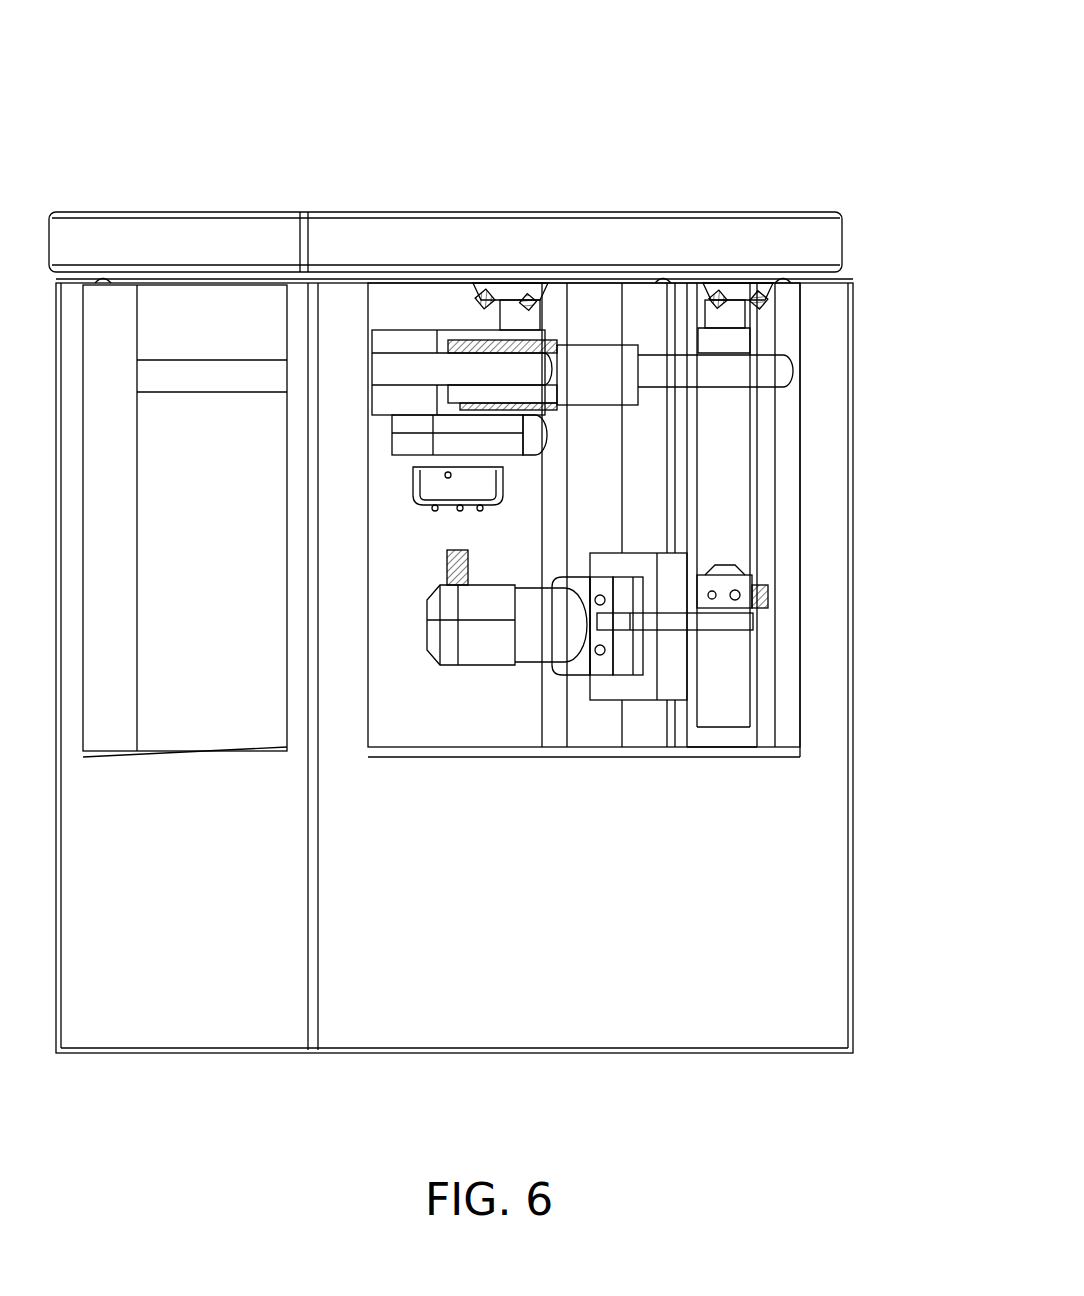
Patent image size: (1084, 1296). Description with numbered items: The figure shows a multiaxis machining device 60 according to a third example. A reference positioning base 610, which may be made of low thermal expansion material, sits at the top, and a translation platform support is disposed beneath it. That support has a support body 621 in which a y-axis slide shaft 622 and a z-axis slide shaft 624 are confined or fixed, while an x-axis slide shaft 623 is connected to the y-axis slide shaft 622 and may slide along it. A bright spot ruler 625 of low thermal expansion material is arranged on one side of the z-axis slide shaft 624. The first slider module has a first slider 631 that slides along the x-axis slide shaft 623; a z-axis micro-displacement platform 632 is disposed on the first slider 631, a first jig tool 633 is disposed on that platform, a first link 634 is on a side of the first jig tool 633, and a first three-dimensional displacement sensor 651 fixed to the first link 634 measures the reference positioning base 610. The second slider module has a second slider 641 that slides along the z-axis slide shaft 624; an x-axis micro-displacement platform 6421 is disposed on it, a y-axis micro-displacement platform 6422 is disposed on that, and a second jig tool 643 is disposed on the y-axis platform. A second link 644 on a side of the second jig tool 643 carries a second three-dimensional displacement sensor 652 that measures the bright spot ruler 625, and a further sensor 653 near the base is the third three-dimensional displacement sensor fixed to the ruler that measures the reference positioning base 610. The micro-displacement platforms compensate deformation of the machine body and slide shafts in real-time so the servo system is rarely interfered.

The multiaxis machining device 60 is at (153, 63).
The reference positioning base 610 is at (815, 243).
The support body 621 is at (815, 890).
The y-axis slide shaft 622 is at (780, 372).
The x-axis slide shaft 623 is at (600, 362).
The z-axis slide shaft 624 is at (652, 452).
The bright spot ruler 625 is at (737, 697).
The first slider 631 is at (410, 335).
The z-axis micro-displacement platform 632 is at (397, 425).
The first jig tool 633 is at (432, 487).
The first link 634 is at (533, 425).
The second slider 641 is at (672, 653).
The x-axis micro-displacement platform 6421 is at (620, 582).
The y-axis micro-displacement platform 6422 is at (638, 588).
The second jig tool 643 is at (528, 647).
The second link 644 is at (702, 617).
The first three-dimensional displacement sensor 651 is at (521, 283).
The second three-dimensional displacement sensor 652 is at (774, 600).
The clamp 653 is at (736, 283).